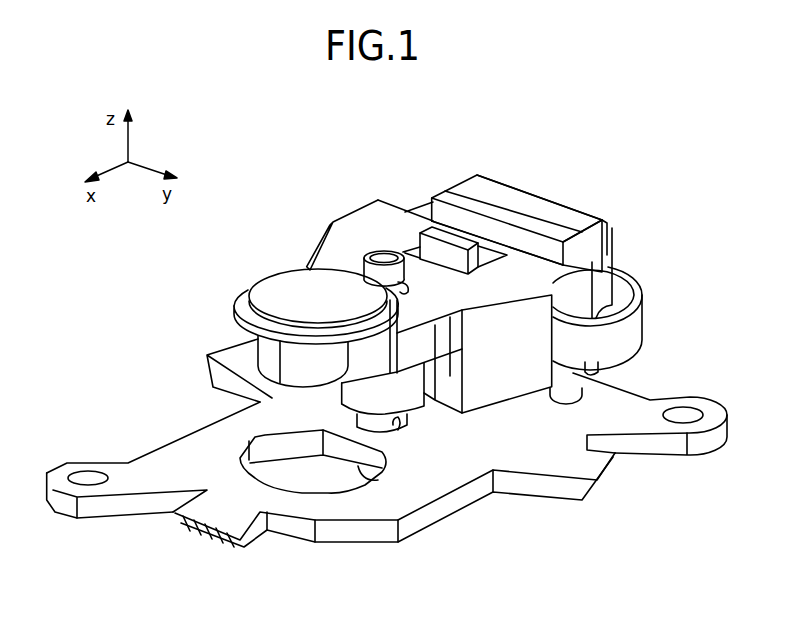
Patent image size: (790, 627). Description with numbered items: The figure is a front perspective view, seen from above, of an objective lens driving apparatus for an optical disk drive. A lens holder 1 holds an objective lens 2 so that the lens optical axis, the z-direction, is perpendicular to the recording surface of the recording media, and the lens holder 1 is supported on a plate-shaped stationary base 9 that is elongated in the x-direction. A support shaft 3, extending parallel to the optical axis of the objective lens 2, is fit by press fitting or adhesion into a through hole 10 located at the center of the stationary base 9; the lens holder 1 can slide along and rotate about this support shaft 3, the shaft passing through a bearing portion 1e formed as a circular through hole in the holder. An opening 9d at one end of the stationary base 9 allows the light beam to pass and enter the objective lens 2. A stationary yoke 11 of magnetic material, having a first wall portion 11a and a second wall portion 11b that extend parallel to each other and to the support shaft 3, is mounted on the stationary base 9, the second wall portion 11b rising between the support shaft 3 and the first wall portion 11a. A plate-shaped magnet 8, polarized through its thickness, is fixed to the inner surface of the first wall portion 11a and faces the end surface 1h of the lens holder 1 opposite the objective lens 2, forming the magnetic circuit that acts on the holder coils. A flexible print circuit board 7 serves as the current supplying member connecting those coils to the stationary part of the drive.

The lens holder 1 is at (357, 230).
The bearing portion 1e is at (406, 285).
The end surface 1h is at (467, 238).
The objective lens 2 is at (288, 288).
The support shaft 3 is at (385, 254).
The flexible print circuit board 7 is at (627, 330).
The magnet 8 is at (561, 227).
The stationary base 9 is at (346, 509).
The opening 9d is at (253, 460).
The through hole 10 is at (403, 436).
The stationary yoke 11 is at (517, 176).
The first wall portion 11a is at (495, 190).
The second wall portion 11b is at (468, 238).